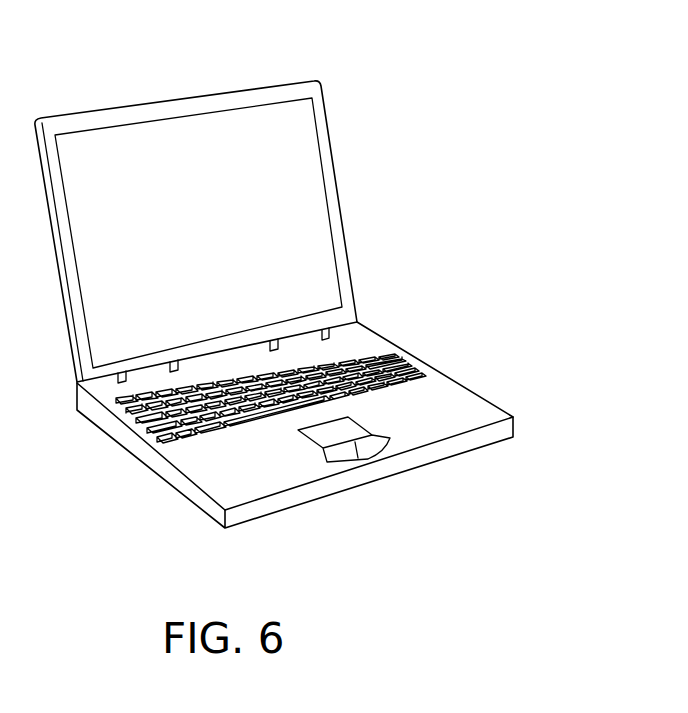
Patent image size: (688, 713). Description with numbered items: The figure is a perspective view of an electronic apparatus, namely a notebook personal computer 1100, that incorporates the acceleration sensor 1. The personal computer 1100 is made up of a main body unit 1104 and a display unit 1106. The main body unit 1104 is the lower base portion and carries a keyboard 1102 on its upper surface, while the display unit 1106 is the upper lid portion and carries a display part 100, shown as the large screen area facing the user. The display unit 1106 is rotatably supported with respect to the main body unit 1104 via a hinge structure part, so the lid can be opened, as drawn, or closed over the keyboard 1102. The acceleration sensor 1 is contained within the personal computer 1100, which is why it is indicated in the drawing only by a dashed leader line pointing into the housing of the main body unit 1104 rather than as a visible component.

The personal computer 1100 is at (274, 296).
The display unit 1106 is at (238, 207).
The display part 100 is at (189, 130).
The keyboard 1102 is at (388, 356).
The main body unit 1104 is at (287, 482).
The acceleration sensor 1 is at (450, 410).